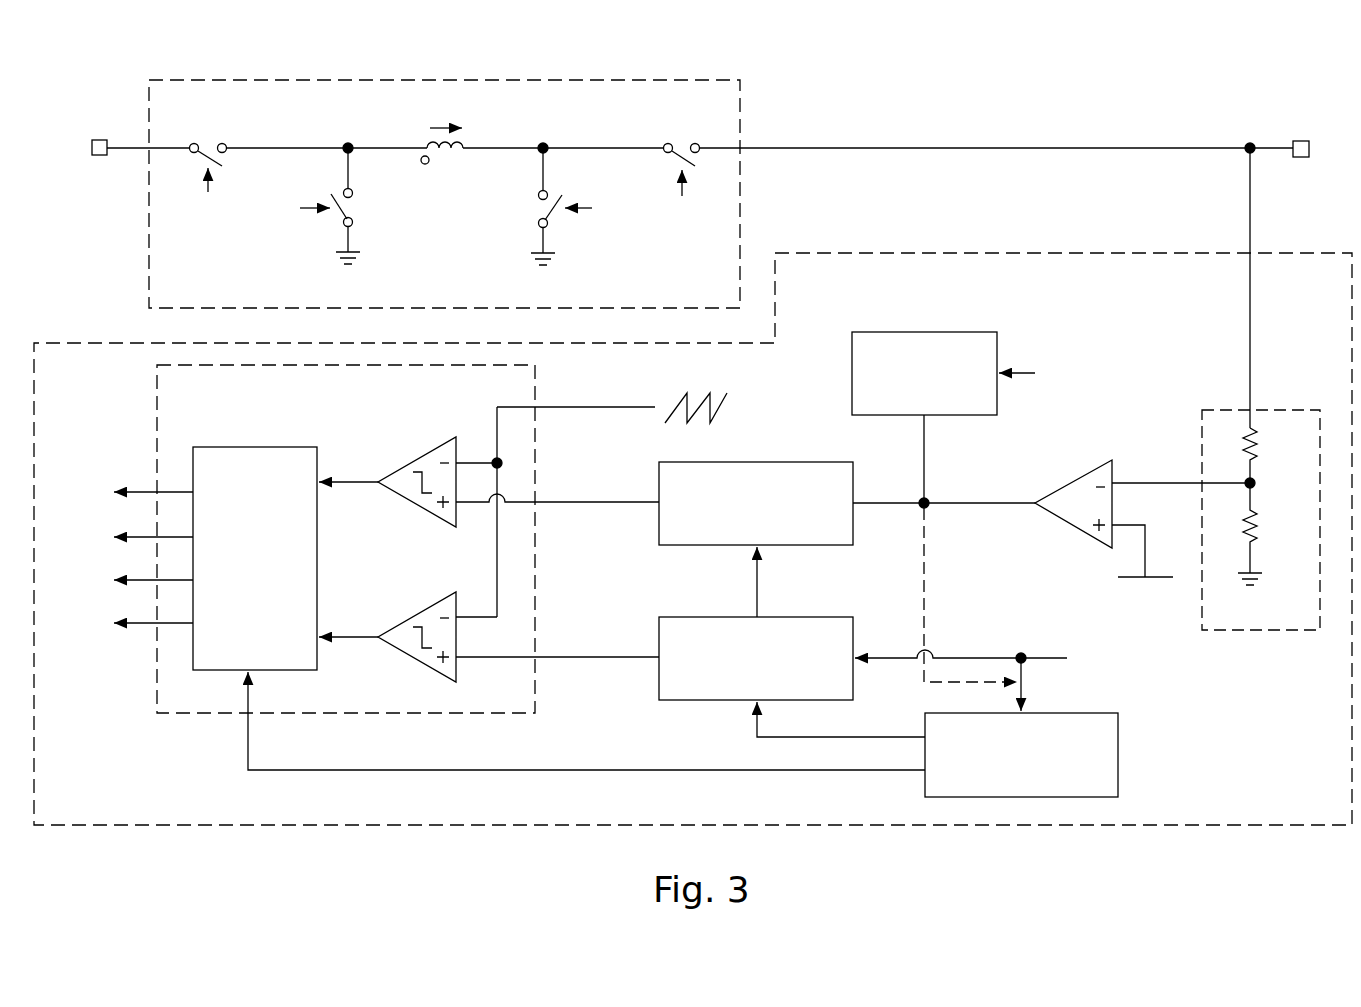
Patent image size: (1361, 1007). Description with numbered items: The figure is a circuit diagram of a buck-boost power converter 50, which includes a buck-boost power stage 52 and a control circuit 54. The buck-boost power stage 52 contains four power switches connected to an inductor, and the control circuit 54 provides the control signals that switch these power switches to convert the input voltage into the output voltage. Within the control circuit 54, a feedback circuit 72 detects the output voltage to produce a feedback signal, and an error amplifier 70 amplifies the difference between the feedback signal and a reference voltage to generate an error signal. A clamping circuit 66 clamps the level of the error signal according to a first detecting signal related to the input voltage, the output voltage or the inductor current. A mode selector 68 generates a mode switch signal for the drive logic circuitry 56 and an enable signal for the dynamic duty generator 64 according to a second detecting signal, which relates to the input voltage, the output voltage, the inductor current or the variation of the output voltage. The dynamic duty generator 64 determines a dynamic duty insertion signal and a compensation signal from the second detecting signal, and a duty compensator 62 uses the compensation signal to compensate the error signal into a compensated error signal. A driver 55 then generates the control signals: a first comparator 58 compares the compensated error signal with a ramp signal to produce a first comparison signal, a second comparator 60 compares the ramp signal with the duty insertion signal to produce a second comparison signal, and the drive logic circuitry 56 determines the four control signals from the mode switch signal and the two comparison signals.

The buck-boost power converter 50 is at (1194, 106).
The buck-boost power stage 52 is at (740, 206).
The control circuit 54 is at (1073, 252).
The driver 55 is at (535, 560).
The drive logic circuitry 56 is at (246, 447).
The comparator 58 is at (418, 457).
The comparator 60 is at (418, 612).
The duty compensator 62 is at (756, 462).
The dynamic duty generator 64 is at (701, 617).
The clamping circuit 66 is at (931, 332).
The mode selector 68 is at (1118, 755).
The error amplifier 70 is at (1076, 527).
The feedback circuit 72 is at (1288, 410).